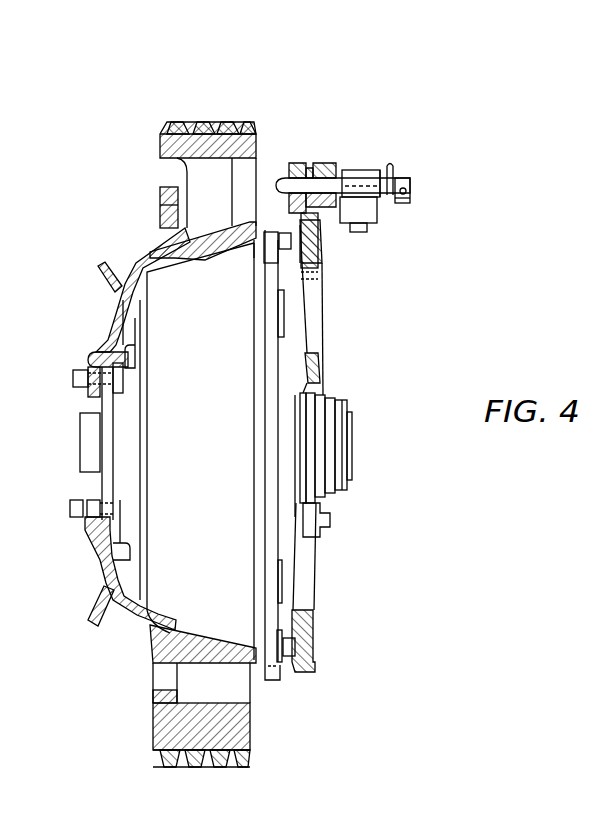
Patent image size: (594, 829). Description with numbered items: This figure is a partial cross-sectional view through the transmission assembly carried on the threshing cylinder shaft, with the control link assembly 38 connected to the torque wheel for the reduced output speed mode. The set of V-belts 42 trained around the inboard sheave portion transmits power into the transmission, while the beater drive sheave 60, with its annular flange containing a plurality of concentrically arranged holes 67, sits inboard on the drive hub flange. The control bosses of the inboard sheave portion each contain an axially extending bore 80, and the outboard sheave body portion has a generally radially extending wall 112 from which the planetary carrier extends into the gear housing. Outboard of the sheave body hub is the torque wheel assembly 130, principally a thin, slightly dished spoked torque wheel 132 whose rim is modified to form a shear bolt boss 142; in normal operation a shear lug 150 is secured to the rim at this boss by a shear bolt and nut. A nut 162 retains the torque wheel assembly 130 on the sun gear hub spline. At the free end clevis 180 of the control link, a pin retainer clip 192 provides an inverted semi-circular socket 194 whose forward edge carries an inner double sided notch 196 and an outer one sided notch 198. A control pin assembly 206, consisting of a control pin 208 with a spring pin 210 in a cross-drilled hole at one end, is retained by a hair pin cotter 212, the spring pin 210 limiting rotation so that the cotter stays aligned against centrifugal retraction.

The control link assembly 38 is at (333, 98).
The V-belts 42 is at (178, 122).
The beater drive sheave 60 is at (132, 645).
The holes 67 is at (160, 205).
The bore 80 is at (255, 690).
The wall 112 is at (278, 549).
The torque wheel assembly 130 is at (330, 340).
The torque wheel 132 is at (325, 307).
The shear bolt boss 142 is at (318, 250).
The shear lug 150 is at (315, 158).
The nut 162 is at (330, 397).
The free end clevis 180 is at (263, 230).
The pin retainer clip 192 is at (345, 165).
The socket 194 is at (375, 173).
The inner double sided notch 196 is at (382, 198).
The outer one sided notch 198 is at (403, 200).
The control pin assembly 206 is at (422, 190).
The control pin 208 is at (252, 250).
The spring pin 210 is at (412, 188).
The hair pin cotter 212 is at (398, 160).